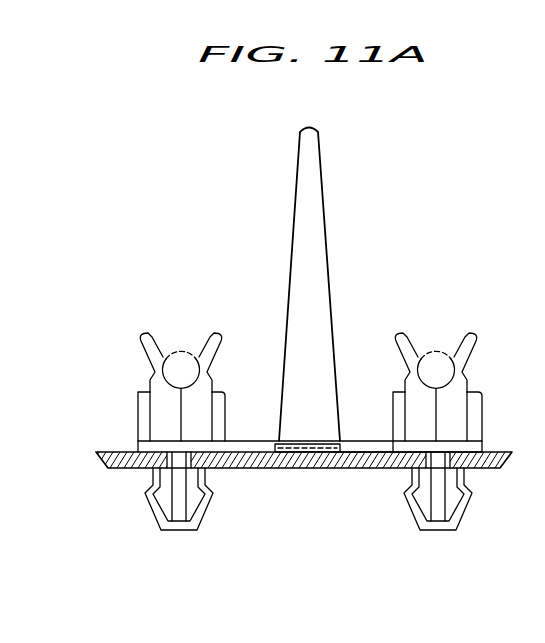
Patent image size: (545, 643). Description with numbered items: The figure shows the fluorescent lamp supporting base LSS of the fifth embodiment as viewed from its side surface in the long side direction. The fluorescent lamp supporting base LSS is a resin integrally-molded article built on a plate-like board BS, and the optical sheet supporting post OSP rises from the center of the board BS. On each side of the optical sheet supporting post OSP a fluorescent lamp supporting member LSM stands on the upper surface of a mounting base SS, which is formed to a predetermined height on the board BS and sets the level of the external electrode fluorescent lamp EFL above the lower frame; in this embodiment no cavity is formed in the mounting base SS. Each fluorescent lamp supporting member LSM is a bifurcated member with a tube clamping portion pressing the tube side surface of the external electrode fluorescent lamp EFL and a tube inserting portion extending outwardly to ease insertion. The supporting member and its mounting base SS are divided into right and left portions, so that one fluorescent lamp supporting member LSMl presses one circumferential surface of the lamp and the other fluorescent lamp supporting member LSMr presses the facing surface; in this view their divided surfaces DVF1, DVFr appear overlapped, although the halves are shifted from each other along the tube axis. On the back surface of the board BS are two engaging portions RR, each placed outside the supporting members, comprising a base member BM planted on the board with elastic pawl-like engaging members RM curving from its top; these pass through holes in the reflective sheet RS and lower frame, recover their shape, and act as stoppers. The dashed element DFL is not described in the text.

The fluorescent lamp supporting base LSS is at (283, 306).
The optical sheet supporting post OSP is at (323, 200).
The fluorescent lamp supporting member LSM is at (410, 393).
The one fluorescent lamp supporting member LSMl is at (392, 348).
The other fluorescent lamp supporting member LSMr is at (486, 348).
The external electrode fluorescent lamp EFL is at (177, 336).
The mounting base SS is at (138, 392).
The board BS is at (253, 443).
The reflective sheet RS is at (360, 447).
The divided surface of one fluorescent lamp supporting member DVF1 is at (183, 415).
The divided surface of the other fluorescent lamp supporting member DVFr is at (117, 417).
The engaging member RM is at (297, 528).
The engaging portion RR is at (172, 538).
The base member BM is at (186, 500).
The dashed flange line DFL is at (270, 455).